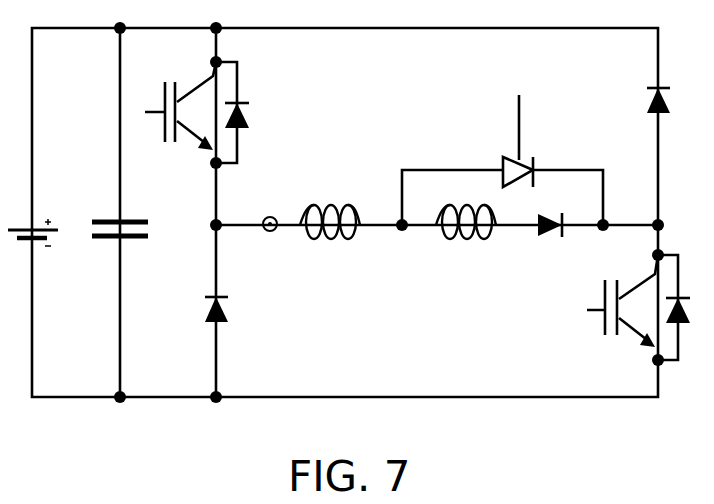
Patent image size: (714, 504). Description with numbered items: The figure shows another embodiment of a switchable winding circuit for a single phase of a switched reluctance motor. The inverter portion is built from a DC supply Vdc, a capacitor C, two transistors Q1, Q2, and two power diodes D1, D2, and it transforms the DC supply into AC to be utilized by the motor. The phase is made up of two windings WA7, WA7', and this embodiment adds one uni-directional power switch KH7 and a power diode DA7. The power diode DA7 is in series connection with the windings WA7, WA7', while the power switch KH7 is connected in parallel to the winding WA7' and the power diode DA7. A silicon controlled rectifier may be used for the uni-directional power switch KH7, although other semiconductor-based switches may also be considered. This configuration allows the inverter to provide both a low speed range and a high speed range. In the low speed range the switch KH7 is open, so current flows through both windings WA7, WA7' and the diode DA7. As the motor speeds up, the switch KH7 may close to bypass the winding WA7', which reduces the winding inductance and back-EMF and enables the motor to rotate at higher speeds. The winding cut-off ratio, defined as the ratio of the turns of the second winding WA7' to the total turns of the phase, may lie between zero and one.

The DC supply Vdc is at (40, 206).
The capacitor C is at (120, 212).
The transistor Q1 is at (213, 112).
The transistor Q2 is at (638, 320).
The power diode D1 is at (193, 332).
The power diode D2 is at (640, 88).
The winding WA7 is at (330, 243).
The winding WA7' is at (467, 245).
The power diode DA7 is at (562, 250).
The uni-directional power switch KH7 is at (502, 160).